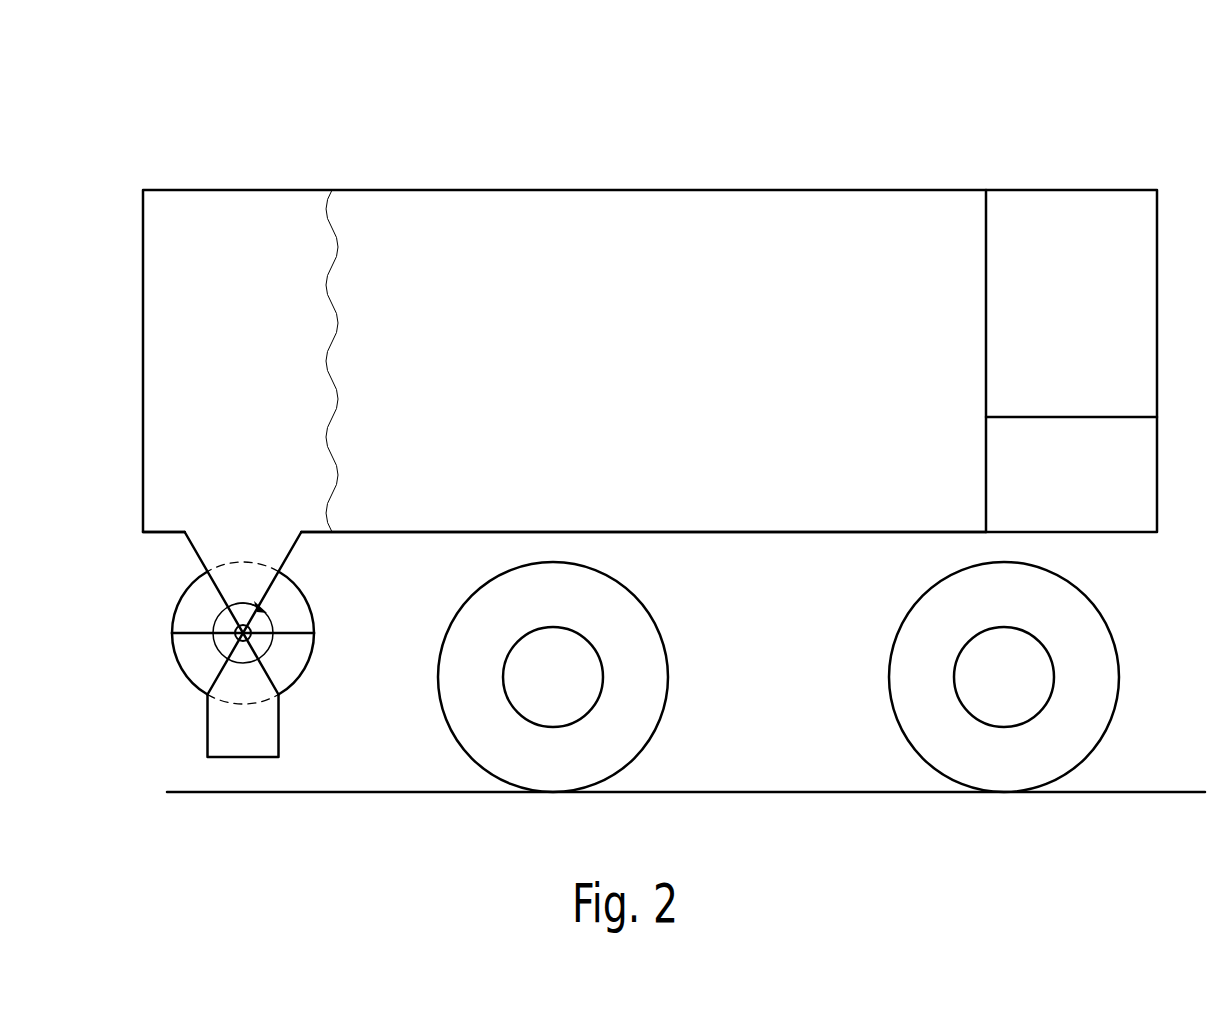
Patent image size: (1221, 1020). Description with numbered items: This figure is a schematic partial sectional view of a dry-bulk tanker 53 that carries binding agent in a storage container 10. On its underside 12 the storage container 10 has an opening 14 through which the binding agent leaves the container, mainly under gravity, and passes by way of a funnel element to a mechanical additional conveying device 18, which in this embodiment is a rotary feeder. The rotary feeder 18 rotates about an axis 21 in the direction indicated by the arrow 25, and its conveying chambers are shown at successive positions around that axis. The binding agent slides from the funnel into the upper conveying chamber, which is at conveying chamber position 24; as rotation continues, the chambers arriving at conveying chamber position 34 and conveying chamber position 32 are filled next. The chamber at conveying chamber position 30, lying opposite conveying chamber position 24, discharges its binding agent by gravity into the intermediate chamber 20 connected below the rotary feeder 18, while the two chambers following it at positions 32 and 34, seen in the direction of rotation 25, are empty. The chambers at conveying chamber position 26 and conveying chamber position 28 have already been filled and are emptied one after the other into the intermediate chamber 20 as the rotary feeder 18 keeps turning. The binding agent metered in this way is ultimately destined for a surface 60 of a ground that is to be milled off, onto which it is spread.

The storage container 10 is at (300, 202).
The underside 12 is at (407, 530).
The opening 14 is at (269, 507).
The mechanical additional conveying device 18 is at (148, 676).
The intermediate chamber 20 is at (257, 718).
The axis 21 is at (249, 638).
The conveying chamber position 24 is at (252, 586).
The arrow 25 is at (242, 603).
The conveying chamber position 26 is at (278, 623).
The conveying chamber position 28 is at (278, 667).
The conveying chamber position 30 is at (233, 685).
The conveying chamber position 32 is at (207, 655).
The conveying chamber position 34 is at (200, 617).
The dry-bulk tanker 53 is at (690, 116).
The surface 60 is at (821, 796).